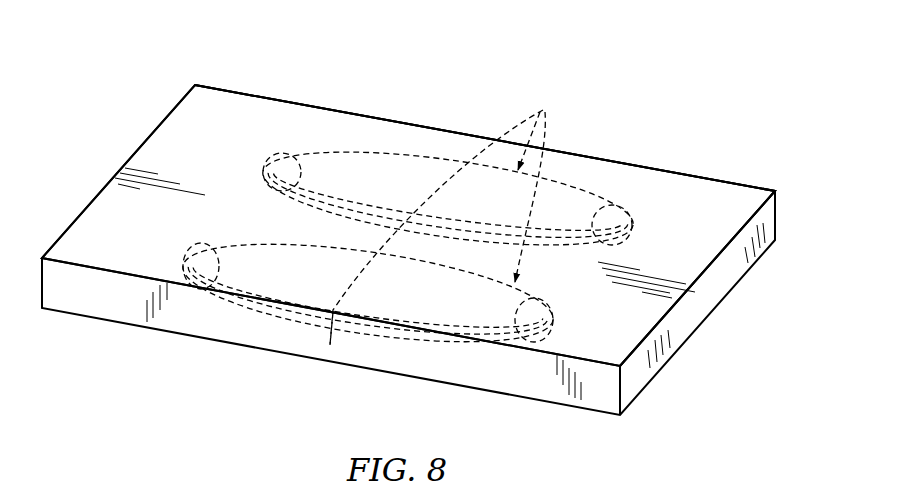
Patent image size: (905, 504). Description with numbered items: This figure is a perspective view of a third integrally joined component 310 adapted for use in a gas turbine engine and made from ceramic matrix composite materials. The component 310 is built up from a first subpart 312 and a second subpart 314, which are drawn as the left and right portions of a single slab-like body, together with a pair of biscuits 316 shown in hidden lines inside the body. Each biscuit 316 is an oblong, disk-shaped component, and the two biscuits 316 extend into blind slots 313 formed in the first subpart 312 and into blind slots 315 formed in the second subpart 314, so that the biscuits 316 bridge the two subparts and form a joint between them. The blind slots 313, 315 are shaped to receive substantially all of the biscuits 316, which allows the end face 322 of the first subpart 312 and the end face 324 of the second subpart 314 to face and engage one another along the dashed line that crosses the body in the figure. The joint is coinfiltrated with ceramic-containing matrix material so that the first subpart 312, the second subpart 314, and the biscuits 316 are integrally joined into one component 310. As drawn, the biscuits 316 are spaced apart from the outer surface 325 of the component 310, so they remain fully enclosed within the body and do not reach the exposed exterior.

The third integrally joined component 310 is at (603, 78).
The first subpart 312 is at (258, 92).
The blind slots 313 is at (288, 166).
The second subpart 314 is at (742, 180).
The blind slots 315 is at (612, 228).
The biscuits 316 is at (537, 184).
The end face 322 is at (328, 348).
The end face 324 is at (335, 352).
The outer surface 325 is at (328, 132).